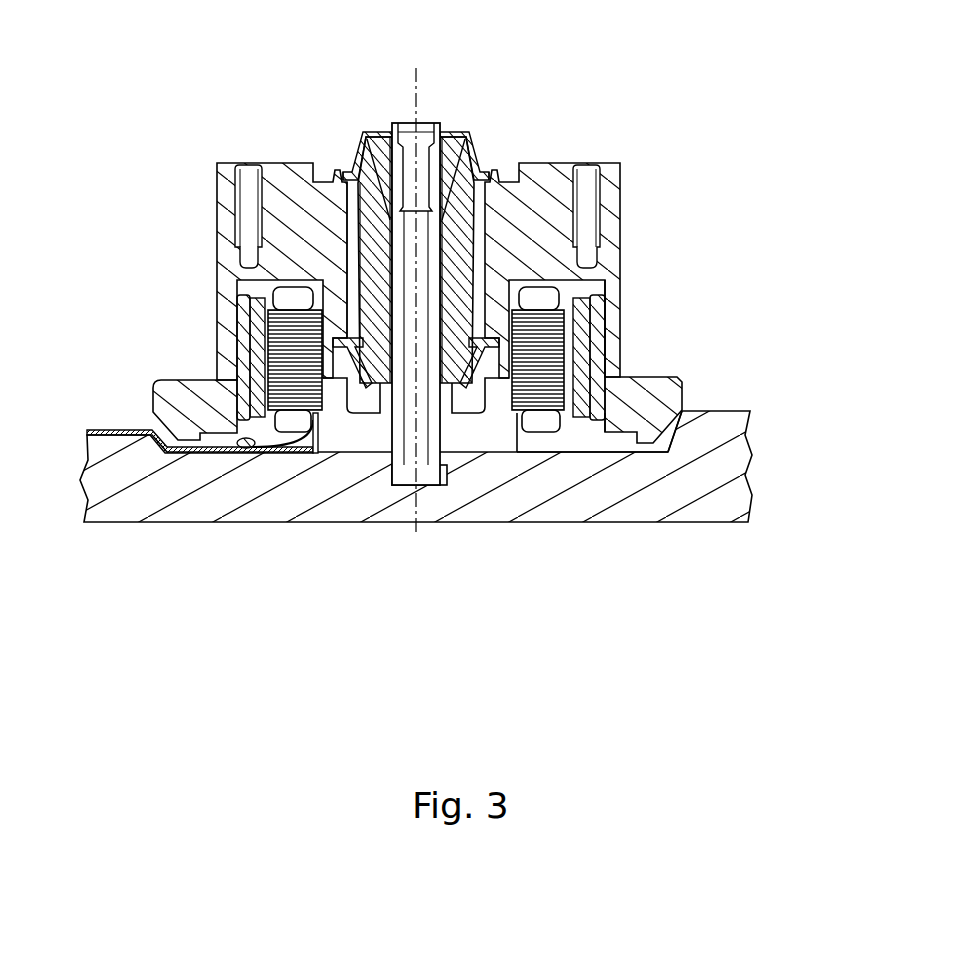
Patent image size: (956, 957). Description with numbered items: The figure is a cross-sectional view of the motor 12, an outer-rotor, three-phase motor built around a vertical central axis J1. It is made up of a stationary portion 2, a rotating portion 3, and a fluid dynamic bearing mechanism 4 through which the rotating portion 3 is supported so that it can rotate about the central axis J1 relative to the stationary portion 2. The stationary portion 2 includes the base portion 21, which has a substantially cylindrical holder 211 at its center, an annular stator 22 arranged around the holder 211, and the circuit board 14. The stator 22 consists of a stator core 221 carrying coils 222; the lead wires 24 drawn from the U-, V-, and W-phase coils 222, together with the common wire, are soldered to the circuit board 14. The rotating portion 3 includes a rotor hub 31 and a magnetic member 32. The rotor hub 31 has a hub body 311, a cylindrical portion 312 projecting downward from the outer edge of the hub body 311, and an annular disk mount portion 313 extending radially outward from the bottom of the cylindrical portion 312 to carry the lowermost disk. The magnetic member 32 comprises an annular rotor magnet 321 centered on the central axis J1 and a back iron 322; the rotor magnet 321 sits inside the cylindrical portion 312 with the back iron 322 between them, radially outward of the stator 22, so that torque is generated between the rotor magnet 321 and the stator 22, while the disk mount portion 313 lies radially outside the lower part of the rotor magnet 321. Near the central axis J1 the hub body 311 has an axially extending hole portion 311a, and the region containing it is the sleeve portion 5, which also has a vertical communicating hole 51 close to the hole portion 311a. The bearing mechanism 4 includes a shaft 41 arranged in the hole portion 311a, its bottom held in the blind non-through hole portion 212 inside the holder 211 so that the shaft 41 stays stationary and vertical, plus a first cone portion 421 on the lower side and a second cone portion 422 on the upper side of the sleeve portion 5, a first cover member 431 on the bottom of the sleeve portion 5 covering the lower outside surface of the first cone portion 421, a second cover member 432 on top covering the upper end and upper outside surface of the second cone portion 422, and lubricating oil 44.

The stationary portion 2 is at (410, 513).
The base portion 21 is at (238, 478).
The holder 211 is at (283, 443).
The non-through hole portion 212 is at (383, 455).
The circuit board 14 is at (117, 431).
The stator 22 is at (295, 343).
The stator core 221 is at (280, 340).
The coils 222 is at (290, 297).
The lead wires 24 is at (230, 398).
The rotating portion 3 is at (529, 265).
The rotor hub 31 is at (505, 265).
The hub body 311 is at (545, 260).
The hole portion 311a is at (368, 168).
The cylindrical portion 312 is at (607, 350).
The disk mount portion 313 is at (668, 387).
The magnetic member 32 is at (511, 318).
The rotor magnet 321 is at (603, 300).
The back iron 322 is at (600, 330).
The fluid dynamic bearing mechanism 4 is at (471, 308).
The shaft 41 is at (436, 465).
The first cone portion 421 is at (443, 400).
The second cone portion 422 is at (473, 135).
The first cover member 431 is at (557, 400).
The second cover member 432 is at (480, 160).
The lubricating oil 44 is at (473, 413).
The sleeve portion 5 is at (413, 162).
The communicating hole 51 is at (258, 165).
The motor 12 is at (227, 65).
The central axis J1 is at (412, 80).